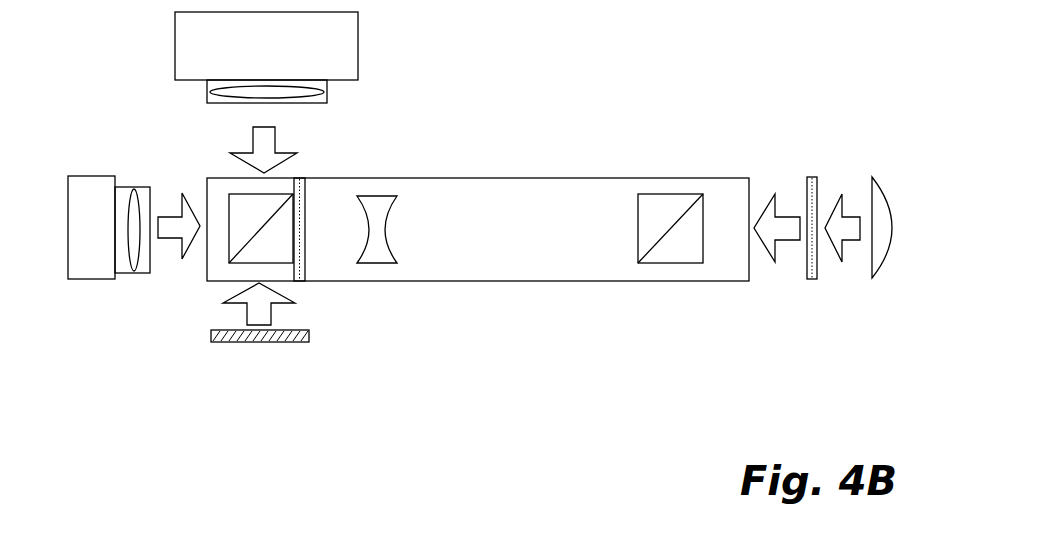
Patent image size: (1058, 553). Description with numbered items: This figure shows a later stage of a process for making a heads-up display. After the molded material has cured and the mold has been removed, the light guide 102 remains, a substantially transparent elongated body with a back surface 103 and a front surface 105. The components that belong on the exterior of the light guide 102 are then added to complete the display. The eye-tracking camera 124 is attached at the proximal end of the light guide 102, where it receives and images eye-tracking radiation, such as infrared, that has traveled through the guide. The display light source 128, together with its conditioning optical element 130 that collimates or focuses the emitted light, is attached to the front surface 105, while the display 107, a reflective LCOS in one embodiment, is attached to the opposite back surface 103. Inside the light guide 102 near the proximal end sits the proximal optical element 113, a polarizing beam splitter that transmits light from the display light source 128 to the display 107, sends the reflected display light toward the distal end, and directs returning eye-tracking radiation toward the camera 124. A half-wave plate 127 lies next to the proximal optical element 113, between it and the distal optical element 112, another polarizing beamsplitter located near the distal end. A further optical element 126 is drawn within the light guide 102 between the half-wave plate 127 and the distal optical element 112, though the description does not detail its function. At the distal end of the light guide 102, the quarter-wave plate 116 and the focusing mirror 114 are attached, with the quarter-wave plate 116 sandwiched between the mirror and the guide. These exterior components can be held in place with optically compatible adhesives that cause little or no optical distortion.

The light guide 102 is at (432, 260).
The back surface 103 is at (543, 282).
The front surface 105 is at (483, 178).
The display 107 is at (230, 342).
The distal optical element 112 is at (638, 217).
The proximal optical element 113 is at (229, 248).
The focusing mirror 114 is at (877, 265).
The quarter-wave plate 116 is at (812, 177).
The eye-tracking camera 124 is at (109, 227).
The lens 126 is at (383, 213).
The half-wave plate 127 is at (300, 215).
The display light source 128 is at (266, 46).
The optical element 130 is at (207, 92).